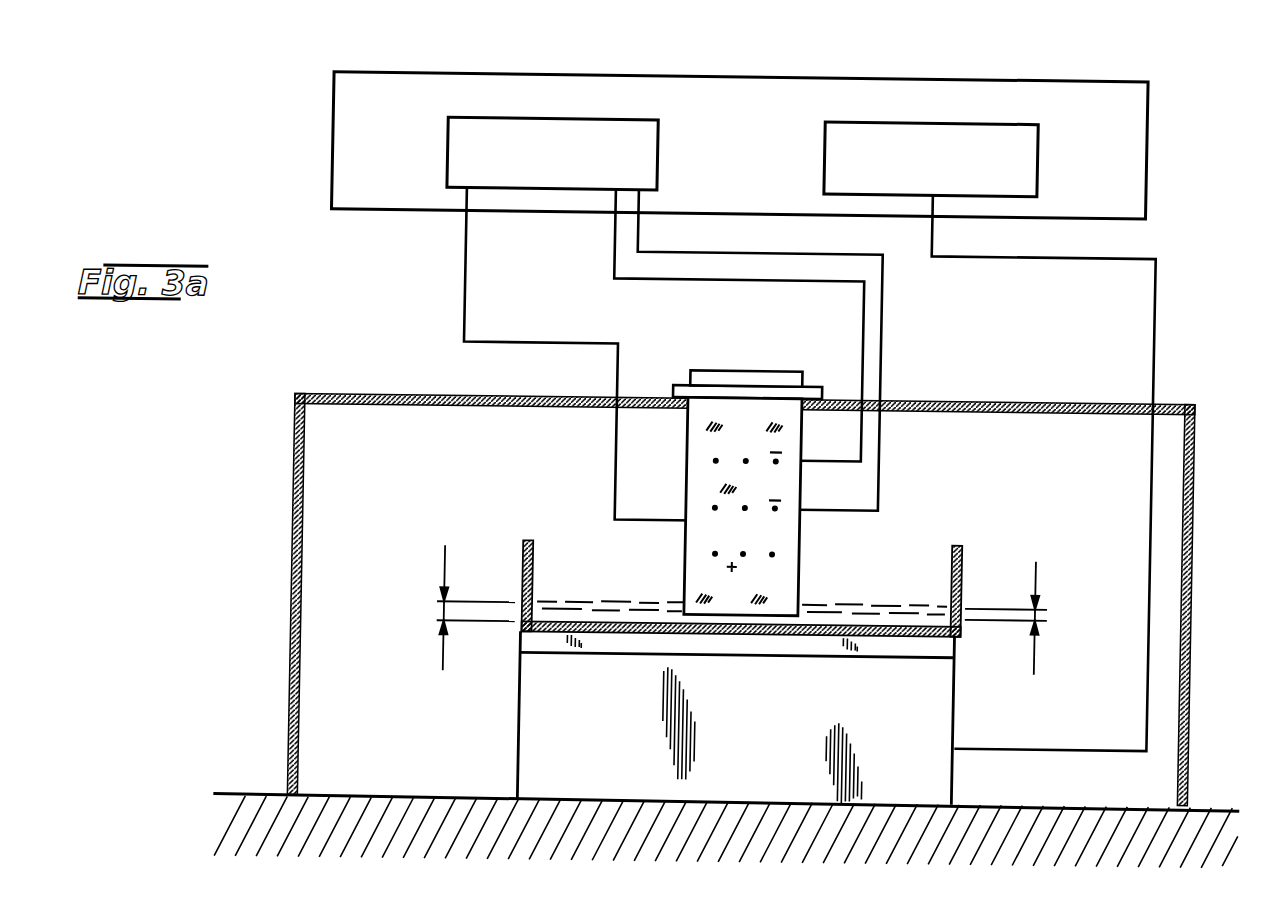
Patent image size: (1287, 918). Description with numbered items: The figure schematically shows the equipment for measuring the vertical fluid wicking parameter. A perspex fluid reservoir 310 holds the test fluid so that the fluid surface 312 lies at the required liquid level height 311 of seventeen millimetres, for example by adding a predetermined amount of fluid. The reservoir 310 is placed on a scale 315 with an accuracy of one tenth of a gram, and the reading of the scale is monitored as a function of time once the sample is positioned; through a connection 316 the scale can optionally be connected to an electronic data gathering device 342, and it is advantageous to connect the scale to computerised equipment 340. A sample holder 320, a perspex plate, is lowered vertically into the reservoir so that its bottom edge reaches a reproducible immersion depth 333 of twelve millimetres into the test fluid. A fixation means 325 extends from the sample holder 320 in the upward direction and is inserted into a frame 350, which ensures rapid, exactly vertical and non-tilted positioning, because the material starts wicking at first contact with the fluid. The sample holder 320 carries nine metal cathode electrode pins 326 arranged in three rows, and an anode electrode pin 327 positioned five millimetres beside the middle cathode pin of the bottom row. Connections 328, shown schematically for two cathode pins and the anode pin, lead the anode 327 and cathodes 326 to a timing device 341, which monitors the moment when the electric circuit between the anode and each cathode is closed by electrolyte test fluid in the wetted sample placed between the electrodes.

The fluid reservoir 310 is at (562, 598).
The liquid level height 311 is at (440, 612).
The fluid surface 312 is at (594, 598).
The scale 315 is at (544, 751).
The connection 316 is at (1152, 326).
The sample holder 320 is at (750, 409).
The fixation means 325 is at (673, 397).
The cathode electrode pins 326 is at (711, 508).
The anode electrode pin 327 is at (737, 557).
The connection of electrodes 328 is at (460, 295).
The immersion depth 333 is at (1048, 613).
The computerised equipment 340 is at (1123, 120).
The timing device 341 is at (525, 121).
The electronic data gathering device 342 is at (923, 124).
The frame 350 is at (1196, 466).